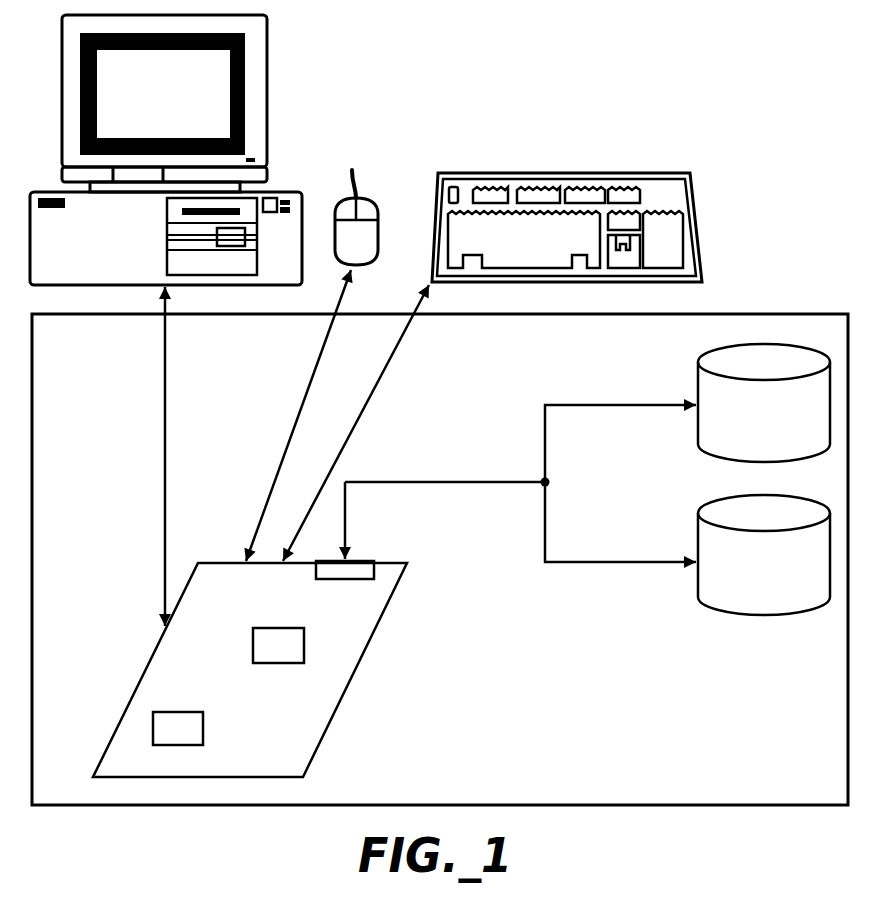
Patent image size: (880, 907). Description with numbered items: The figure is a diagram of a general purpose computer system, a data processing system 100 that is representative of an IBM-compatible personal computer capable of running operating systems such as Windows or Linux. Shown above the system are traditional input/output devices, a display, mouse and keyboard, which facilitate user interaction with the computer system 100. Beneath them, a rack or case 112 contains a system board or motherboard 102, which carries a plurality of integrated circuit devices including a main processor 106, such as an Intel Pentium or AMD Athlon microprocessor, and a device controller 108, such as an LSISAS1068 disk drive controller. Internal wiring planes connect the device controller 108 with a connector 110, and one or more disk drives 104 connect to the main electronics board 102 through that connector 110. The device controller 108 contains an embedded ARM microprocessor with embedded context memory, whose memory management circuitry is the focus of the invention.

The data processing system 100 is at (441, 73).
The motherboard 102 is at (375, 635).
The disk drive 104 is at (788, 426).
The main processor 106 is at (203, 725).
The device controller 108 is at (304, 652).
The connector 110 is at (374, 570).
The case 112 is at (831, 784).